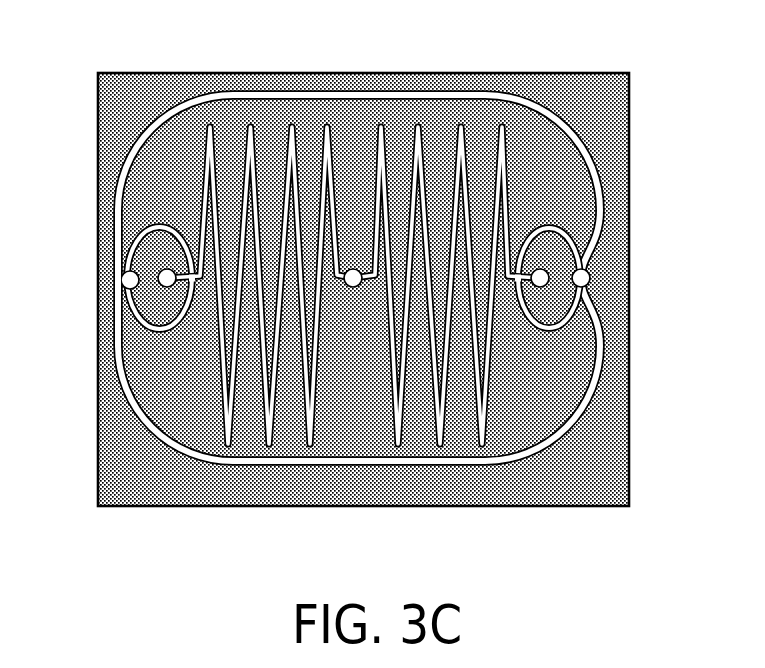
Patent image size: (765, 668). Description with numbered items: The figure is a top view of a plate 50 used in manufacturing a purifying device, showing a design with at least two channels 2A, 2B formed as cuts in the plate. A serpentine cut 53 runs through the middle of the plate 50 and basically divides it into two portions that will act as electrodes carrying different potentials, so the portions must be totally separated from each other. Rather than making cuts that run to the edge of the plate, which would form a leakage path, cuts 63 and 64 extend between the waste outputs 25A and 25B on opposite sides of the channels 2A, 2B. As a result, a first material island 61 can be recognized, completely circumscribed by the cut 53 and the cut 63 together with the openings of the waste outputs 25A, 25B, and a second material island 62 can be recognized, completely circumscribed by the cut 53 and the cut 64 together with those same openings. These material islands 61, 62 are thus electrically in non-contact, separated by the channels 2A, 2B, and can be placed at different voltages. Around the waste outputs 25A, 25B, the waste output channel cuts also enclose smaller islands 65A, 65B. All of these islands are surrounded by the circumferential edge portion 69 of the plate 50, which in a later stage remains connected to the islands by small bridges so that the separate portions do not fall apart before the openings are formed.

The plate 50 is at (665, 90).
The cut 53 is at (417, 137).
The first material island 61 is at (360, 112).
The second material island 62 is at (357, 420).
The cut 63 is at (262, 97).
The cut 64 is at (312, 461).
The island 65A is at (153, 250).
The island 65B is at (562, 247).
The waste output 25A is at (130, 280).
The waste output 25B is at (584, 278).
The circumferential edge portion 69 is at (601, 457).
The channel 2A is at (229, 448).
The channel 2B is at (440, 448).